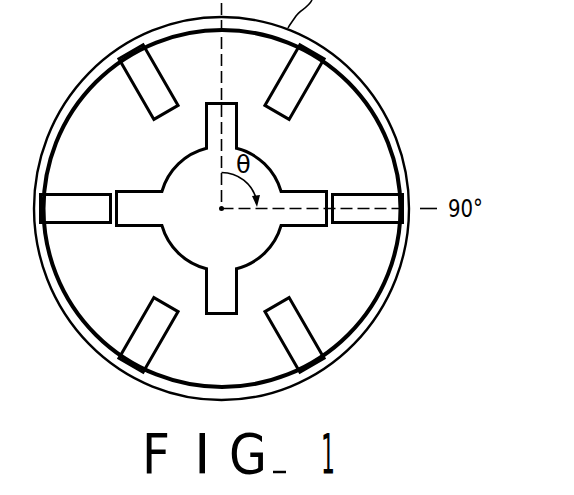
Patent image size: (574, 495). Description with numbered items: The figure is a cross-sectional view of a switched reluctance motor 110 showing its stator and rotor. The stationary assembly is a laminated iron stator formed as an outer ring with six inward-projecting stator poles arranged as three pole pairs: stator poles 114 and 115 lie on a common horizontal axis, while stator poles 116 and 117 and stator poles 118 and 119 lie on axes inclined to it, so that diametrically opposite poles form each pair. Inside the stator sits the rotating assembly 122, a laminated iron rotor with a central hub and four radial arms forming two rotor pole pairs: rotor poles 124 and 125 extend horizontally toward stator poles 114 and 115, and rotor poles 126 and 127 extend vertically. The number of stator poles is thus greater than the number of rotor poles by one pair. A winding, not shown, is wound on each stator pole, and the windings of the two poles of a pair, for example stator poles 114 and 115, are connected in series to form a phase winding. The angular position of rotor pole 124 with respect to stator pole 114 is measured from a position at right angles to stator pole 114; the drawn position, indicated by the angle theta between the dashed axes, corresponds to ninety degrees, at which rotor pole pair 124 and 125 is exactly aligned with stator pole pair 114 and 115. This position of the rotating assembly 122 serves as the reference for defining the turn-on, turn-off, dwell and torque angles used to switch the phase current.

The switched reluctance motor 110 is at (338, 315).
The stator pole 114 is at (362, 224).
The stator pole 115 is at (73, 194).
The stator pole 116 is at (301, 97).
The stator pole 117 is at (138, 325).
The stator pole 118 is at (165, 86).
The stator pole 119 is at (283, 347).
The rotating assembly 122 is at (213, 206).
The rotor pole 124 is at (310, 180).
The rotor pole 125 is at (134, 192).
The rotor pole 126 is at (205, 117).
The rotor pole 127 is at (206, 294).